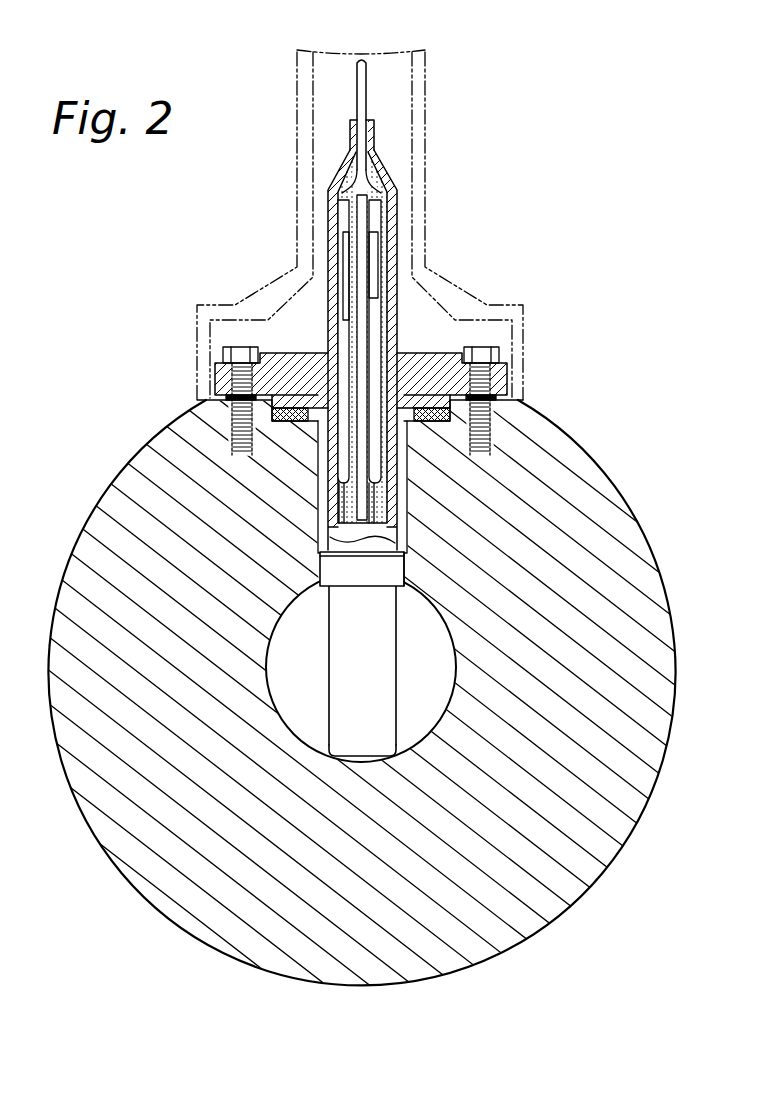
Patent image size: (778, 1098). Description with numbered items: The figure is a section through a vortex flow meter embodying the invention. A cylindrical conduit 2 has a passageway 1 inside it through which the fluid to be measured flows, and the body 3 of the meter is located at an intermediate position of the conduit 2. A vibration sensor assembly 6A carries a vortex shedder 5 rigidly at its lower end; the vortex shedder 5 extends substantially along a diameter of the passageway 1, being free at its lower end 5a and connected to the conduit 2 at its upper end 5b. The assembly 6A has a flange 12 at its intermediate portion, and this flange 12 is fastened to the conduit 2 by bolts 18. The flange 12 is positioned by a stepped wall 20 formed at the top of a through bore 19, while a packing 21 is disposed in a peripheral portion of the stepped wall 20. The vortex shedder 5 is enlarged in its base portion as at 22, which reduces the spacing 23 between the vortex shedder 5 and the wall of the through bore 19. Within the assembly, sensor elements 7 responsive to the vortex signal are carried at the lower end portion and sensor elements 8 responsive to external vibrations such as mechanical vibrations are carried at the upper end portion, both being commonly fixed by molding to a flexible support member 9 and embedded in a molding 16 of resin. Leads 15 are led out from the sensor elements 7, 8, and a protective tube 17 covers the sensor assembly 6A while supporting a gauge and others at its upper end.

The passageway 1 is at (436, 690).
The conduit 2 is at (643, 540).
The body 3 is at (305, 343).
The vortex shedder 5 is at (380, 668).
The lower end of vortex shedder 5a is at (363, 762).
The upper end of vortex shedder 5b is at (243, 385).
The vibration sensor assembly 6A is at (335, 262).
The sensor elements 7 is at (363, 513).
The sensor elements 8 is at (374, 300).
The flexible support member 9 is at (362, 460).
The flange 12 is at (506, 382).
The leads 15 is at (398, 176).
The molding 16 is at (352, 210).
The protective tube 17 is at (300, 90).
The bolts 18 is at (484, 356).
The through bore 19 is at (408, 476).
The stepped wall 20 is at (407, 392).
The packing 21 is at (430, 420).
The enlarged base portion 22 is at (338, 572).
The spacing 23 is at (404, 567).